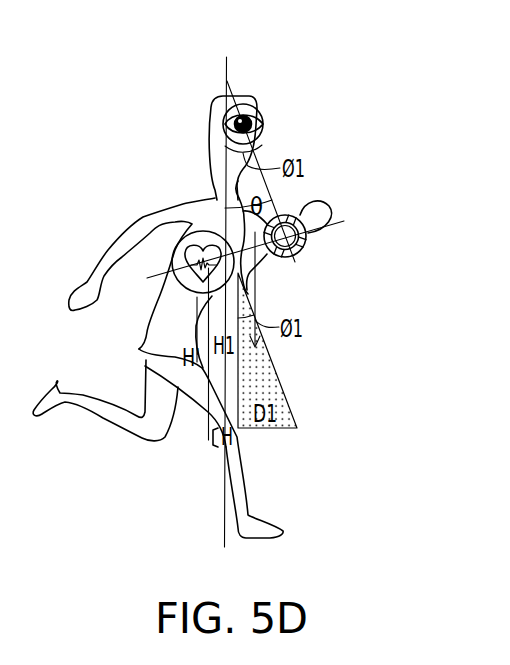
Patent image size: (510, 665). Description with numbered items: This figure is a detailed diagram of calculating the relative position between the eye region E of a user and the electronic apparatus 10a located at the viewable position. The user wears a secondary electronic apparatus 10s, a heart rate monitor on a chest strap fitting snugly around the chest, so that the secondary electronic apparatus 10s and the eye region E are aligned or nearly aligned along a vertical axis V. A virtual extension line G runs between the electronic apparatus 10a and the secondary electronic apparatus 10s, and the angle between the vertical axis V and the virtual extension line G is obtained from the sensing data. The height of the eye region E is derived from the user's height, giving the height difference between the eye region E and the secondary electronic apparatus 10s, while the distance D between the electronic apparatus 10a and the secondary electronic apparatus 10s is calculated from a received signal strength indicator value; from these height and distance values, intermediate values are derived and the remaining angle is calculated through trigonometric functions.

The secondary electronic apparatus 10s is at (198, 232).
The electronic apparatus 10a is at (318, 248).
The eye region E is at (263, 121).
The virtual extension line G is at (338, 277).
The vertical axis V is at (227, 286).
The distance D is at (267, 370).